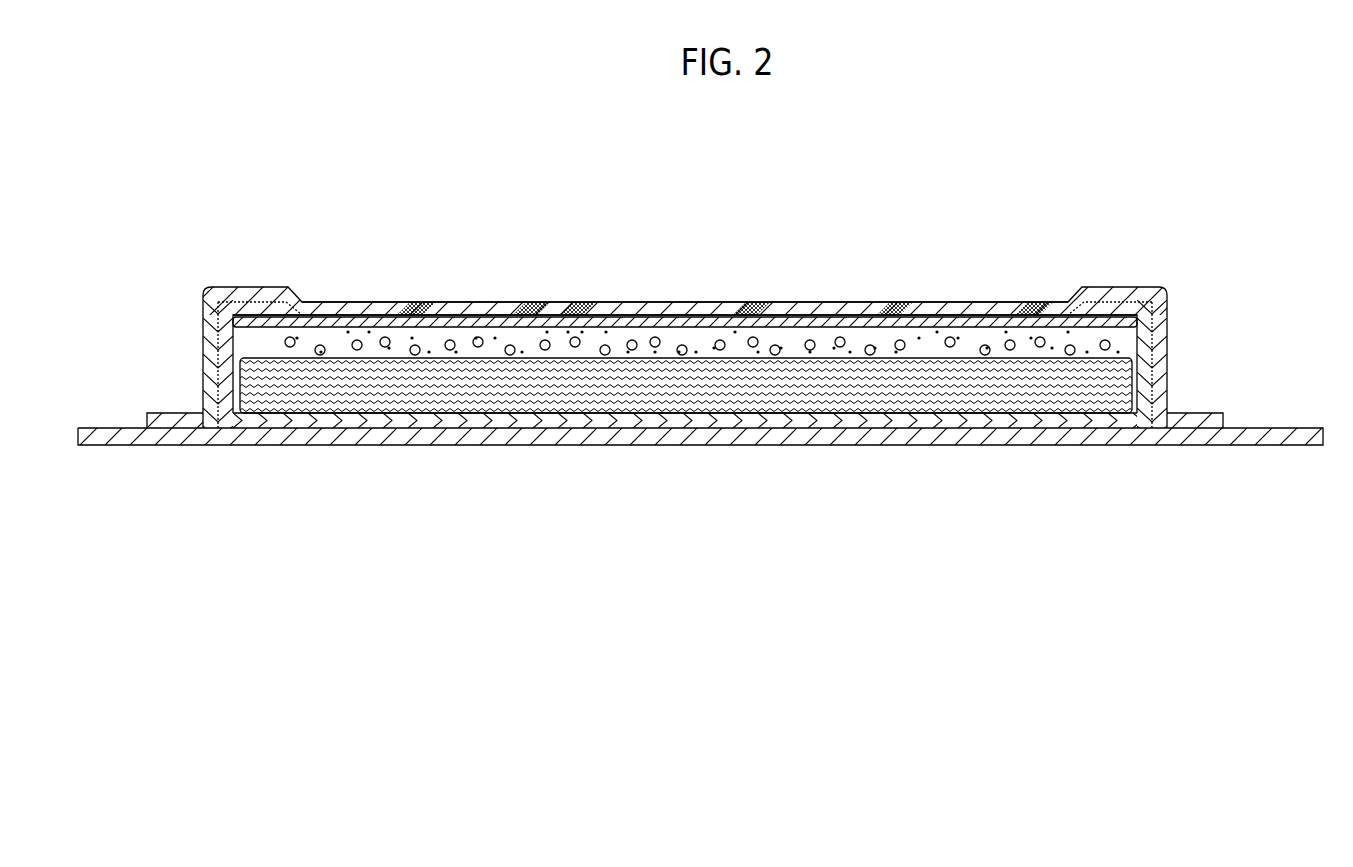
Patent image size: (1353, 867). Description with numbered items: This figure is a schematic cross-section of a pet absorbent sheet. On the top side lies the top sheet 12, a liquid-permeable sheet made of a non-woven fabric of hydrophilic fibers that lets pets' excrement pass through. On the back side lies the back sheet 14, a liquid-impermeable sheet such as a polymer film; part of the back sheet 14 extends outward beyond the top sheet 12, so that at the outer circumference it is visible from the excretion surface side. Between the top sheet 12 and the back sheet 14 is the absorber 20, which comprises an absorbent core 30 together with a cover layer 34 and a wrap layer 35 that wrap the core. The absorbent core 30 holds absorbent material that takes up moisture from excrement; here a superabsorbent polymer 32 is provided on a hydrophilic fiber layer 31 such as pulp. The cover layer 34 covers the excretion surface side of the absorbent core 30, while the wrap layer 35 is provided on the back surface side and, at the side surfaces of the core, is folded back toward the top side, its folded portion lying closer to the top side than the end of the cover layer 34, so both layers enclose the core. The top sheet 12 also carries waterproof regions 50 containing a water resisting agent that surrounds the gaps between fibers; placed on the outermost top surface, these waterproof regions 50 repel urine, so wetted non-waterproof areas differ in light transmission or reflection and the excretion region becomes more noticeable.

The top sheet 12 is at (830, 305).
The back sheet 14 is at (1020, 442).
The absorber 20 is at (218, 343).
The absorbent core 30 is at (1133, 343).
The hydrophilic fiber layer 31 is at (1118, 385).
The superabsorbent polymer 32 is at (675, 342).
The cover layer 34 is at (790, 327).
The wrap layer 35 is at (268, 310).
The waterproof regions 50 is at (740, 305).